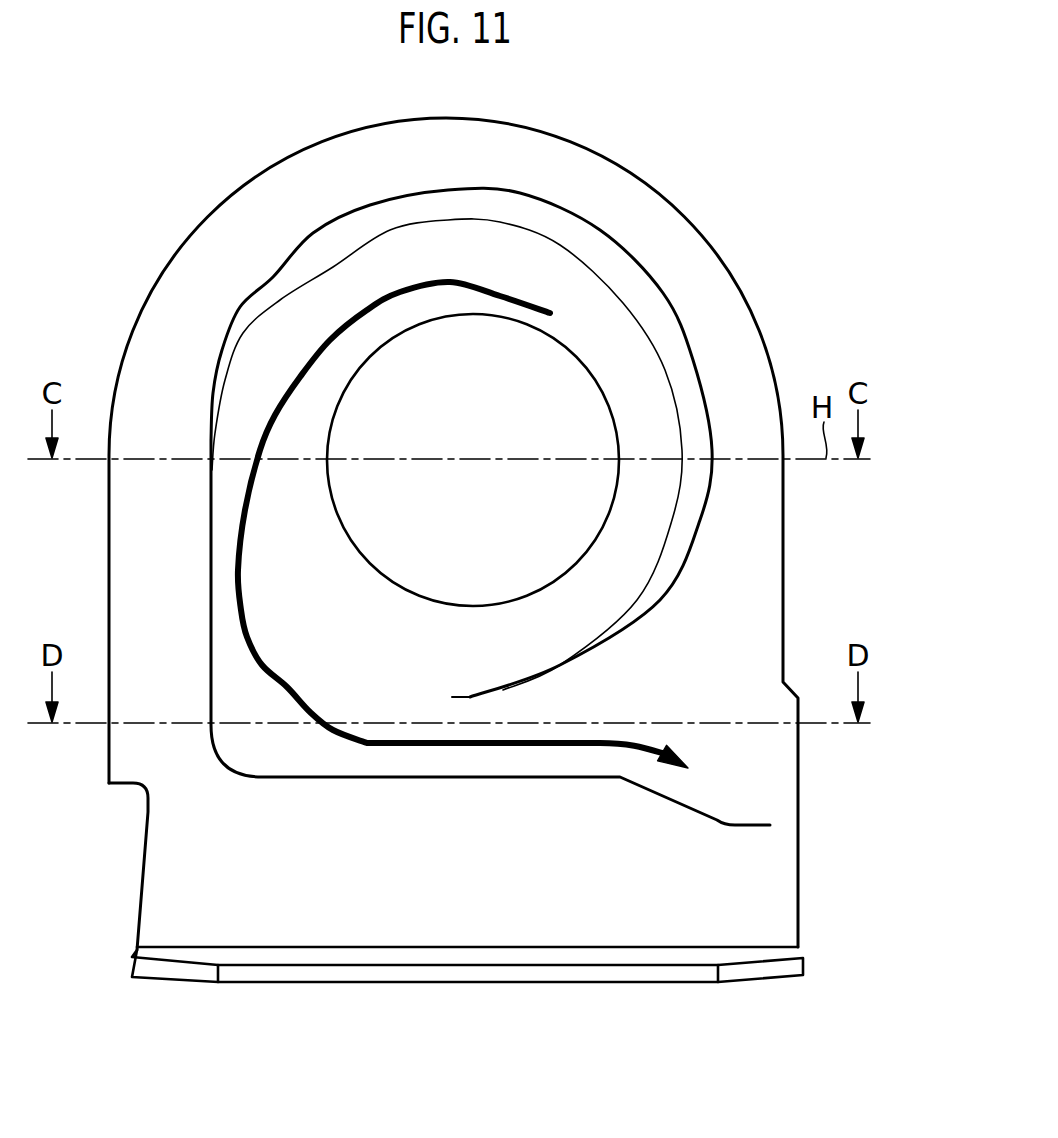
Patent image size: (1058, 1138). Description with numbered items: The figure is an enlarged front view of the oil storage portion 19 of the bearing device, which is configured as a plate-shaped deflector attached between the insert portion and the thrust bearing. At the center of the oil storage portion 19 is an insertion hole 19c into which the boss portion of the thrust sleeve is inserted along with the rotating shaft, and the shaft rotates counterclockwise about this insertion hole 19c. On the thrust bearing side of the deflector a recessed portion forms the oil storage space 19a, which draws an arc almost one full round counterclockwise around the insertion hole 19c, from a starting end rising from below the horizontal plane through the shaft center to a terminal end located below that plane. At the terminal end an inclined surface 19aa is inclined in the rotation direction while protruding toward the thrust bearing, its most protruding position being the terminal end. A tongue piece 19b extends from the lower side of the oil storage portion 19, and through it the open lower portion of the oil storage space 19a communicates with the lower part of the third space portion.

The oil storage portion 19 is at (607, 152).
The oil storage space 19a is at (282, 443).
The inclined surface 19aa is at (593, 700).
The tongue piece 19b is at (537, 983).
The insertion hole 19c is at (570, 345).